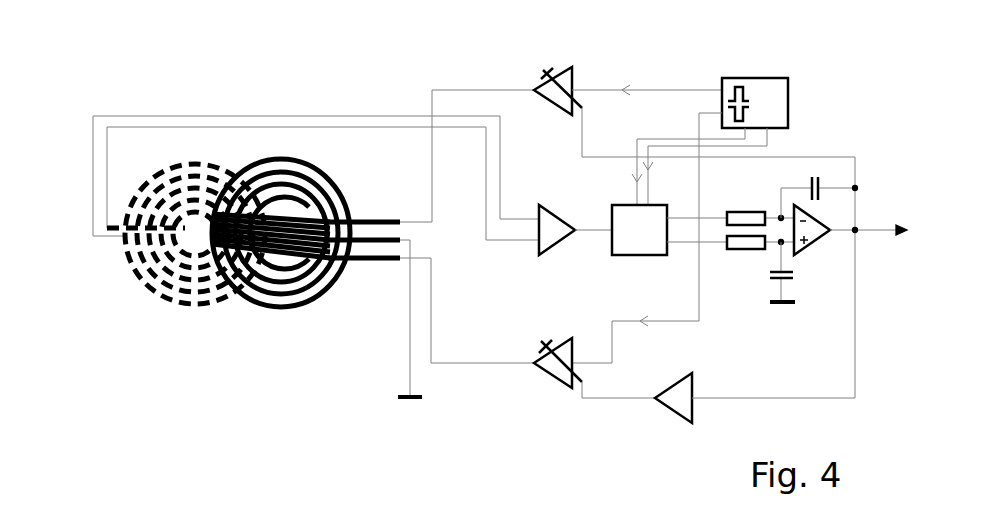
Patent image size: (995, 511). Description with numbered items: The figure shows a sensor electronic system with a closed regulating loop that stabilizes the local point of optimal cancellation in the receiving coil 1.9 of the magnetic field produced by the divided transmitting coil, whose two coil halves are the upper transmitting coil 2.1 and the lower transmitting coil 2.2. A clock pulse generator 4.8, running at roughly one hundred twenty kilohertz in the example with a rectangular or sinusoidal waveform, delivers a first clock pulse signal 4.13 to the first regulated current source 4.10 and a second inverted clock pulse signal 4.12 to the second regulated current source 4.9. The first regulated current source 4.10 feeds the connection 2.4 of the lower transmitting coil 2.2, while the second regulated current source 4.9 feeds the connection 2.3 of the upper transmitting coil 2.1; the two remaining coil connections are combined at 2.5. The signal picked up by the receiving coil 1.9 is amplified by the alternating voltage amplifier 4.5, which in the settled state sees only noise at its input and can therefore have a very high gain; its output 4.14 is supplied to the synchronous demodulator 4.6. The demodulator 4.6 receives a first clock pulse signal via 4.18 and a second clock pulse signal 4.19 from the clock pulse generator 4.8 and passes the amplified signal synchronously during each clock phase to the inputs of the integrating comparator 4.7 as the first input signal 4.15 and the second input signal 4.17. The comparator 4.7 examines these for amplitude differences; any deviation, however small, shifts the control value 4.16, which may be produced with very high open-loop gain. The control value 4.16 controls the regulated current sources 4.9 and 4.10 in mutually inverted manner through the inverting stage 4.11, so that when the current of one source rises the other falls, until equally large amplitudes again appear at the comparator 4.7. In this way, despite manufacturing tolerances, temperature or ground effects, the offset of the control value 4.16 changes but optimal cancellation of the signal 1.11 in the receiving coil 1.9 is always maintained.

The signal 1.11 is at (156, 123).
The receiving coil 1.9 is at (148, 196).
The upper transmitting coil 2.1 is at (312, 190).
The lower transmitting coil 2.2 is at (310, 272).
The connection for the first upper coil half 2.3 is at (368, 218).
The connection for the second lower coil half 2.4 is at (372, 257).
The combined connection of the coil halves 2.5 is at (417, 377).
The alternating voltage amplifier 4.5 is at (552, 228).
The synchronous demodulator 4.6 is at (703, 230).
The integrating comparator 4.7 is at (814, 248).
The clock pulse generator 4.8 is at (782, 78).
The second regulated current source 4.9 is at (535, 82).
The first regulated current source 4.10 is at (550, 360).
The inverting stage 4.11 is at (695, 382).
The second inverted clock pulse signal 4.12 is at (662, 88).
The first clock pulse signal 4.13 is at (646, 320).
The amplifier output line 4.14 is at (596, 234).
The first input signal 4.15 is at (727, 210).
The control value 4.16 is at (875, 244).
The second input signal 4.17 is at (710, 245).
The first clock pulse signal for demodulation 4.18 is at (636, 150).
The second clock pulse signal 4.19 is at (770, 146).